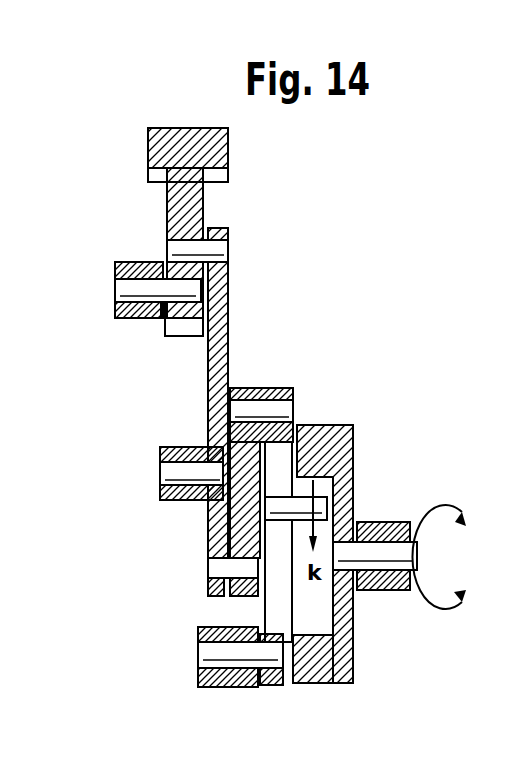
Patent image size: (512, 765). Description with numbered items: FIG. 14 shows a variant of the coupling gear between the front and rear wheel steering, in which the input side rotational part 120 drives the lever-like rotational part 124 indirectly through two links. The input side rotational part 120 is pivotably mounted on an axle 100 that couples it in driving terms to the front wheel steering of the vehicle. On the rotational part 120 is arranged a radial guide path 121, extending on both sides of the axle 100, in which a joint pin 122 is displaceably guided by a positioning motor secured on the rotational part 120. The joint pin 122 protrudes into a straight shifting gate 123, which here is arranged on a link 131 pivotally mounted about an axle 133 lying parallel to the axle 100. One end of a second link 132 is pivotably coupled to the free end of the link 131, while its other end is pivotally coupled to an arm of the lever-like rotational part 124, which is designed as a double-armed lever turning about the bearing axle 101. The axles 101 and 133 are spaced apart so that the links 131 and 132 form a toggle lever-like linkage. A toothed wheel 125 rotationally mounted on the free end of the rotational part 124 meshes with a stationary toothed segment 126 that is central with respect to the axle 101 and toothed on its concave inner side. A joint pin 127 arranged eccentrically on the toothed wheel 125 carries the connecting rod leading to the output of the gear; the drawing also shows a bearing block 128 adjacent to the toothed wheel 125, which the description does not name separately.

The axle 100 is at (386, 555).
The axle 101 is at (162, 468).
The input side rotational part 120 is at (337, 451).
The radial guide path 121 is at (318, 620).
The joint pin 122 is at (323, 505).
The straight shifting gate 123 is at (272, 598).
The lever-like rotational part 124 is at (222, 321).
The toothed wheel 125 is at (182, 216).
The stationary toothed segment 126 is at (216, 152).
The joint pin 127 is at (120, 288).
The bearing block 128 is at (142, 312).
The link 131 is at (278, 392).
The link 132 is at (240, 530).
The axle 133 is at (238, 650).